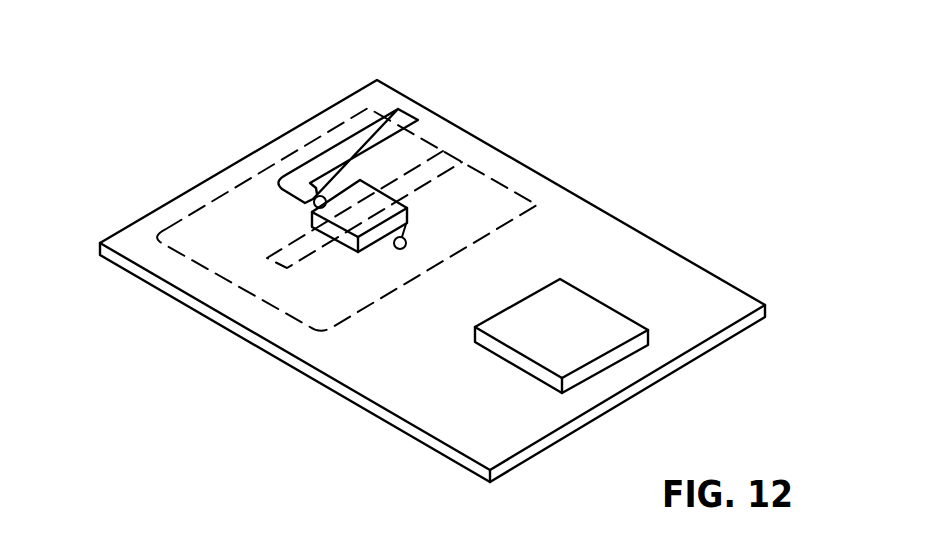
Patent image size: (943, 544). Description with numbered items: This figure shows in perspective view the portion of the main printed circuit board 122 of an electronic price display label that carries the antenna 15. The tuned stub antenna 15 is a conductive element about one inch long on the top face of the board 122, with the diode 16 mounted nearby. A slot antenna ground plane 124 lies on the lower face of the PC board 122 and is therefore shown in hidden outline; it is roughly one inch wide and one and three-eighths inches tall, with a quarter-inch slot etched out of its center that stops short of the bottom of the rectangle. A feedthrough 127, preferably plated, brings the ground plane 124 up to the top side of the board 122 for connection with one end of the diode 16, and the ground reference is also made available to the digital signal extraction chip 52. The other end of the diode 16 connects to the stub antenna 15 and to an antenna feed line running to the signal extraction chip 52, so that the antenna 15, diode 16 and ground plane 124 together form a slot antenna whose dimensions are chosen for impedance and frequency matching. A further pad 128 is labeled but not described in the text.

The antenna 15 is at (407, 113).
The diode 16 is at (372, 206).
The digital signal extraction chip 52 is at (600, 365).
The printed circuit board 122 is at (583, 212).
The slot antenna ground plane 124 is at (193, 242).
The feedthrough 127 is at (397, 250).
The contact pad 128 is at (305, 203).